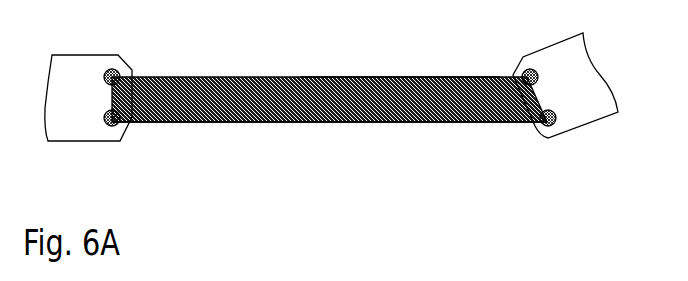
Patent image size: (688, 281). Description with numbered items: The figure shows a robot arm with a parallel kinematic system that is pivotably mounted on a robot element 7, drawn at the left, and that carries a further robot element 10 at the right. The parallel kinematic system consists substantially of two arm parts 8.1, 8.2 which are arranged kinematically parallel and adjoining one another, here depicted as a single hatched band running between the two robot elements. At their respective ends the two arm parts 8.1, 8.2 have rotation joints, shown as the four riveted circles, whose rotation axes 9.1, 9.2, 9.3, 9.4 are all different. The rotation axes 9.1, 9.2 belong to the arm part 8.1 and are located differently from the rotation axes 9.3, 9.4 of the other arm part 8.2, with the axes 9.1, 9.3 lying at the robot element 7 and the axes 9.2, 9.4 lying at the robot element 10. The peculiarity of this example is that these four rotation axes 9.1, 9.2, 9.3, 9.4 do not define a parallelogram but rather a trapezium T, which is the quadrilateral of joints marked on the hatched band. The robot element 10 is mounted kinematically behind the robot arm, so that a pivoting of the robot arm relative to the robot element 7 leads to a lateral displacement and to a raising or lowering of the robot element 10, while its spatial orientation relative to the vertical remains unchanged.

The robot element 7 is at (70, 53).
The arm part 8.1 is at (302, 75).
The arm part 8.2 is at (307, 124).
The trapezium T is at (390, 107).
The rotation axis 9.1 is at (120, 64).
The rotation axis 9.2 is at (523, 57).
The rotation axis 9.3 is at (120, 142).
The rotation axis 9.4 is at (543, 129).
The robot element 10 is at (586, 124).